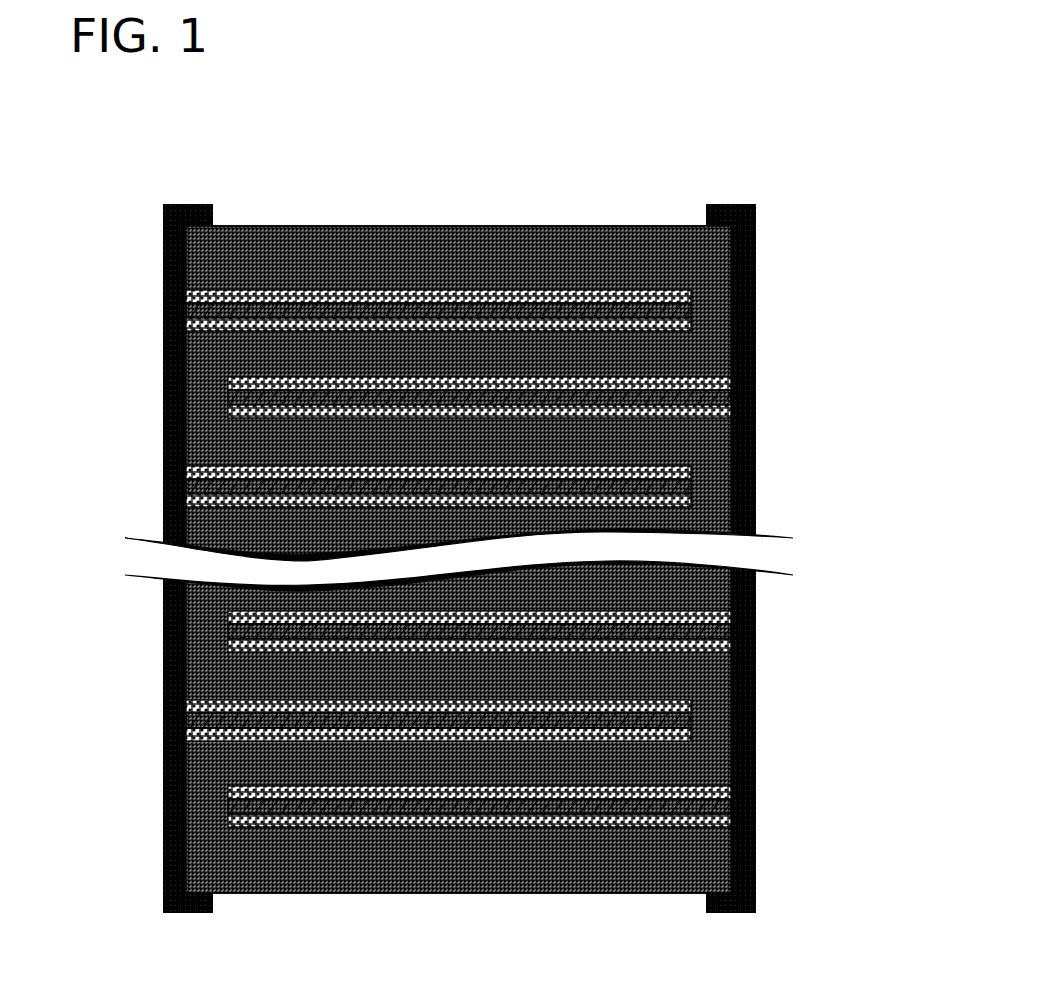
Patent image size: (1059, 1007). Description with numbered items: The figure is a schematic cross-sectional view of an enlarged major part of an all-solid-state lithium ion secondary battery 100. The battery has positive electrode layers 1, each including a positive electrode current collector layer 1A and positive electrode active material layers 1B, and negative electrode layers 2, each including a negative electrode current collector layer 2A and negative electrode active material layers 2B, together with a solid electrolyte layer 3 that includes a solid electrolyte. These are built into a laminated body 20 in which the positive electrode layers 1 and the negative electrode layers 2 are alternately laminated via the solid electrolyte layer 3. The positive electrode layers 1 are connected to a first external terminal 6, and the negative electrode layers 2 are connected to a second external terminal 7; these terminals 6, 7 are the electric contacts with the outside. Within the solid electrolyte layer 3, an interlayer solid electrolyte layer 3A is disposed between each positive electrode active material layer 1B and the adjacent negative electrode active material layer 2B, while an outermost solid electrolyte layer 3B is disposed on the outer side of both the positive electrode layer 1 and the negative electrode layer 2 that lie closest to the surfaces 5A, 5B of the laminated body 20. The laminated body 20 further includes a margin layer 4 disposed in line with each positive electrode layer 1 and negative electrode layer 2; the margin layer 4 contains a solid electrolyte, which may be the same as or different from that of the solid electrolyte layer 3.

The all-solid-state lithium ion secondary battery 100 is at (679, 112).
The laminated body 20 is at (712, 324).
The positive electrode layer 1 is at (85, 745).
The positive electrode current collector layer 1A is at (222, 799).
The positive electrode active material layer 1B is at (222, 785).
The negative electrode layer 2 is at (840, 618).
The negative electrode current collector layer 2A is at (683, 711).
The negative electrode active material layer 2B is at (683, 698).
The solid electrolyte layer 3 is at (85, 236).
The interlayer solid electrolyte layer 3A is at (262, 343).
The outermost solid electrolyte layer 3B is at (262, 246).
The margin layer 4 is at (207, 388).
The surface of the laminated body 5A is at (452, 886).
The surface of the laminated body 5B is at (435, 217).
The first external terminal 6 is at (733, 436).
The second external terminal 7 is at (167, 435).